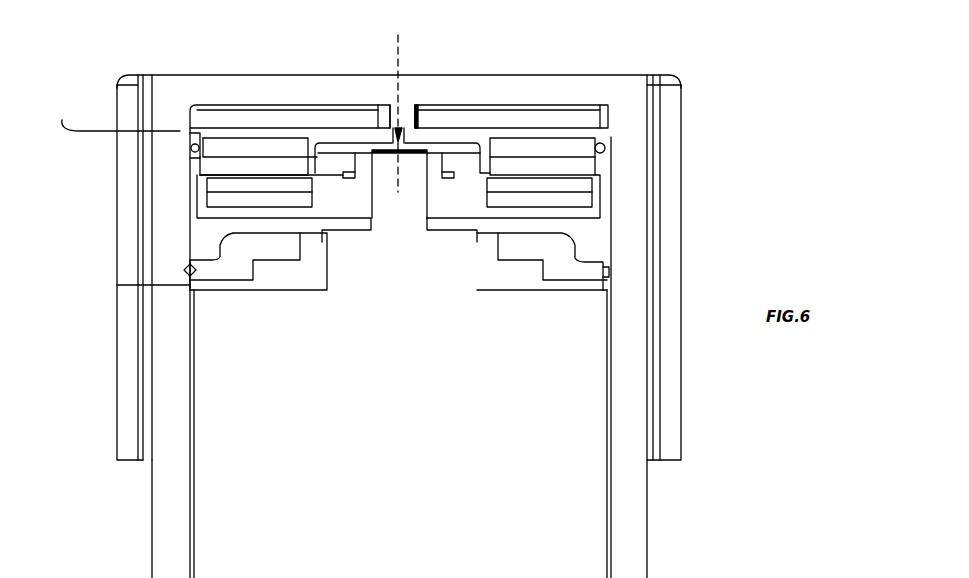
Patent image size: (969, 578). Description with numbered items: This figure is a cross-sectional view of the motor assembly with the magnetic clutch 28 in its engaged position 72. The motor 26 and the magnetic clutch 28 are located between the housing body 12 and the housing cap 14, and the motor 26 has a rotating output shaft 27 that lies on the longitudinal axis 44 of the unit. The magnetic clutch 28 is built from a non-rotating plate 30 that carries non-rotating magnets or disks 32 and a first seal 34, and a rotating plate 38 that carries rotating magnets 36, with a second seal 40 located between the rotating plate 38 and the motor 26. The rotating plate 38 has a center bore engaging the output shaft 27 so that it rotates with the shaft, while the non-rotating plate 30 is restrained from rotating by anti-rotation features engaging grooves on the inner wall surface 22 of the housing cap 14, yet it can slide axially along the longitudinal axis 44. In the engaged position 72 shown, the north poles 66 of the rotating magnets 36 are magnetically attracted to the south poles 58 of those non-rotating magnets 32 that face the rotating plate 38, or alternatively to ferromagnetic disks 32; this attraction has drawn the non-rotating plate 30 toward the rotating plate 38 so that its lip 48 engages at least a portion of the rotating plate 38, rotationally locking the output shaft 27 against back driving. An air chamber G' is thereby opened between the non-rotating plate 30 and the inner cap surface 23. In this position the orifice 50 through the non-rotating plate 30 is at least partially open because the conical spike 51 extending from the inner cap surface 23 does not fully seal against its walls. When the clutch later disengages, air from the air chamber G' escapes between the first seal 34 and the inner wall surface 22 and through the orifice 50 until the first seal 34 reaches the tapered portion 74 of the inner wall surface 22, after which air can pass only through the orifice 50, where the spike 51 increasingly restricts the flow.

The housing body 12 is at (140, 528).
The housing cap 14 is at (104, 153).
The inner wall surface 22 is at (183, 223).
The inner cap surface 23 is at (225, 110).
The motor 26 is at (408, 395).
The output shaft 27 is at (408, 222).
The magnetic clutch 28 is at (76, 232).
The non-rotating plate 30 is at (290, 118).
The non-rotating magnets or disks 32 is at (577, 145).
The first seal 34 is at (195, 146).
The rotating magnets 36 is at (570, 200).
The rotating plate 38 is at (612, 213).
The second seal 40 is at (609, 272).
The longitudinal axis 44 is at (400, 48).
The lip 48 is at (603, 156).
The orifice 50 is at (402, 140).
The spike 51 is at (397, 138).
The south pole 58 is at (560, 171).
The north pole 66 is at (530, 194).
The engaged position 72 is at (712, 105).
The tapered portion 74 is at (110, 116).
The air chamber G' is at (474, 75).